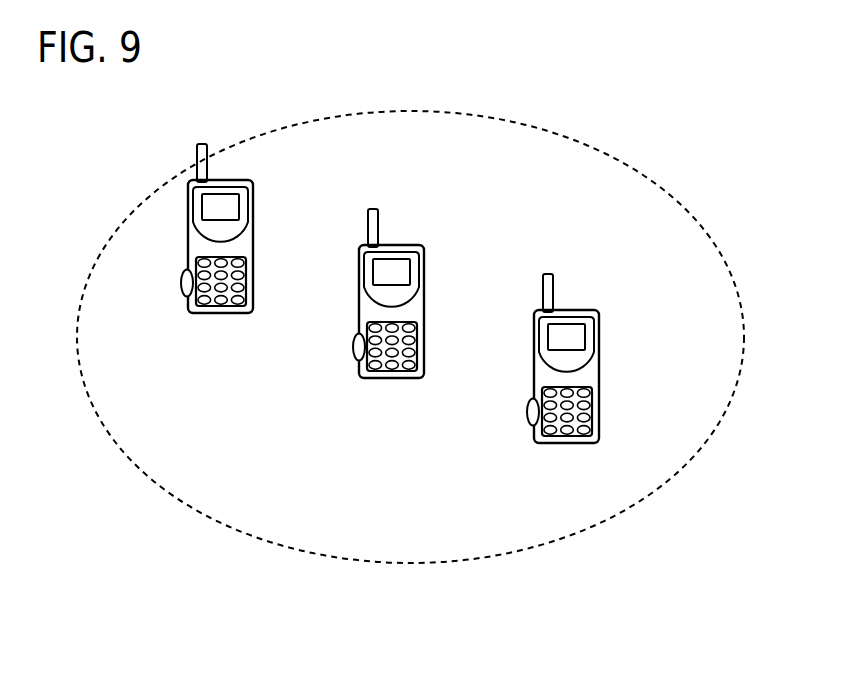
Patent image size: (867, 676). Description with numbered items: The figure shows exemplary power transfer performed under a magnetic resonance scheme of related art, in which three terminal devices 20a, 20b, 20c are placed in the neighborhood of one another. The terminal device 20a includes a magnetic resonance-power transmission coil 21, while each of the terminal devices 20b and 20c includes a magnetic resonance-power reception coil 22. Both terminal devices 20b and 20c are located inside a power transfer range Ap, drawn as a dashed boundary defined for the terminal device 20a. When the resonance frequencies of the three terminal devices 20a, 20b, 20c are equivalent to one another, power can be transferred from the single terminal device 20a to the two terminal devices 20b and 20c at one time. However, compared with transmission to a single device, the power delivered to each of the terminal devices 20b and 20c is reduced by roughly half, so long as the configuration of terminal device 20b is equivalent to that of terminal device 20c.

The terminal device 20a is at (395, 377).
The terminal device 20b is at (218, 313).
The terminal device 20c is at (568, 443).
The magnetic resonance-power transmission coil 21 is at (353, 348).
The magnetic resonance-power reception coil 22 is at (181, 283).
The power transfer range Ap is at (393, 563).